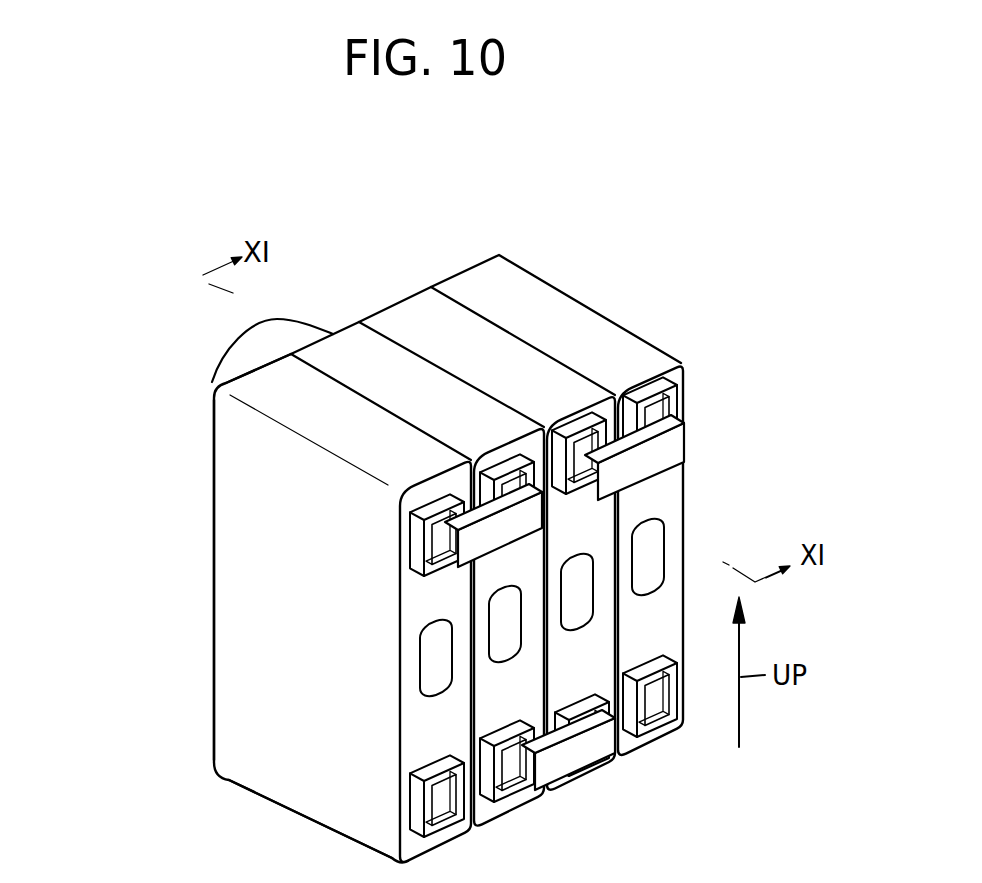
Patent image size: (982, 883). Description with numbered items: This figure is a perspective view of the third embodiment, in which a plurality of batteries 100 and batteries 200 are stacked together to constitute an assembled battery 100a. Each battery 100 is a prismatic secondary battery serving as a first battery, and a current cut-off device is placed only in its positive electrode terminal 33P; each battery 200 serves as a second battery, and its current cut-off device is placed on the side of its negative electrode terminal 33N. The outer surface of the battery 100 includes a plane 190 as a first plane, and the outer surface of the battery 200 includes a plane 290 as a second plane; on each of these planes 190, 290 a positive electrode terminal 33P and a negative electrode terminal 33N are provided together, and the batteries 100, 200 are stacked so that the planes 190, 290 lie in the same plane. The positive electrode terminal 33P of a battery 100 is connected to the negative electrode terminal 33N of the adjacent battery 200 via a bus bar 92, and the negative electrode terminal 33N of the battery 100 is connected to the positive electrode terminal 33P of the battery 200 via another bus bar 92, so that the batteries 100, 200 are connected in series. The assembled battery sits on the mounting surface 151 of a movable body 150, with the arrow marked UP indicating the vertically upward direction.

The assembled battery 100a is at (128, 417).
The battery 100 is at (213, 470).
The battery 200 is at (212, 382).
The movable body 150 is at (191, 598).
The mounting surface 151 is at (267, 823).
The plane 190 is at (418, 692).
The plane 290 is at (680, 537).
The positive electrode terminal 33P is at (450, 525).
The negative electrode terminal 33N is at (523, 493).
The bus bar 92 is at (643, 463).